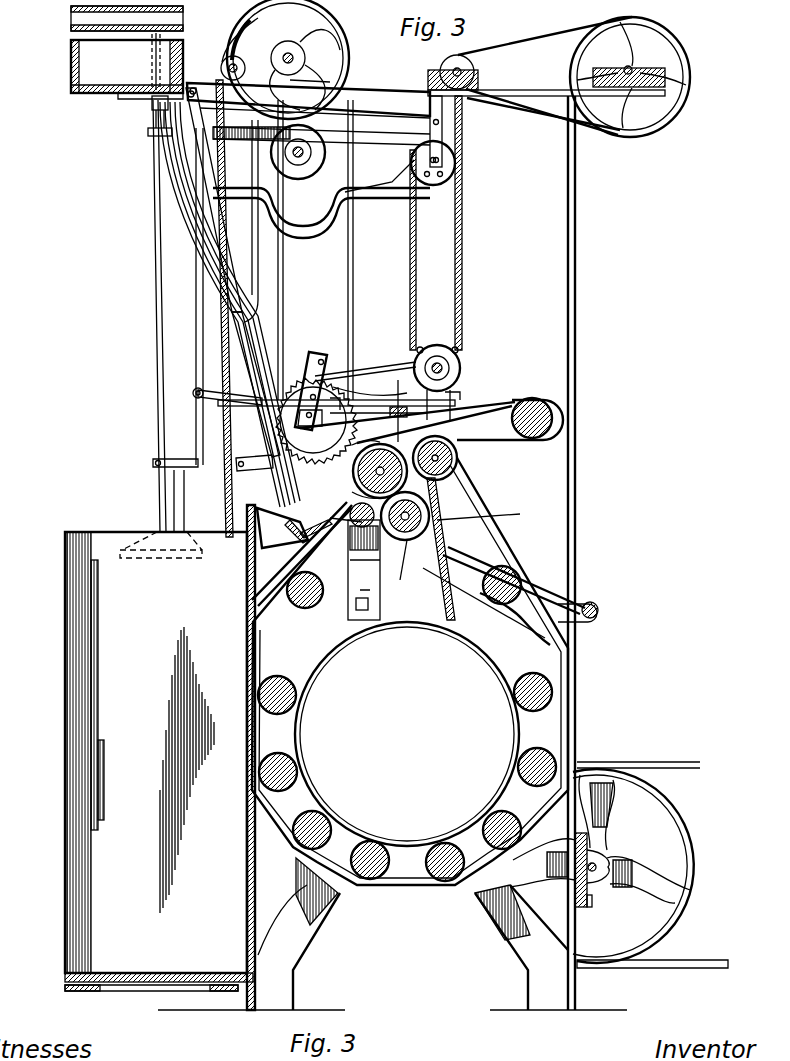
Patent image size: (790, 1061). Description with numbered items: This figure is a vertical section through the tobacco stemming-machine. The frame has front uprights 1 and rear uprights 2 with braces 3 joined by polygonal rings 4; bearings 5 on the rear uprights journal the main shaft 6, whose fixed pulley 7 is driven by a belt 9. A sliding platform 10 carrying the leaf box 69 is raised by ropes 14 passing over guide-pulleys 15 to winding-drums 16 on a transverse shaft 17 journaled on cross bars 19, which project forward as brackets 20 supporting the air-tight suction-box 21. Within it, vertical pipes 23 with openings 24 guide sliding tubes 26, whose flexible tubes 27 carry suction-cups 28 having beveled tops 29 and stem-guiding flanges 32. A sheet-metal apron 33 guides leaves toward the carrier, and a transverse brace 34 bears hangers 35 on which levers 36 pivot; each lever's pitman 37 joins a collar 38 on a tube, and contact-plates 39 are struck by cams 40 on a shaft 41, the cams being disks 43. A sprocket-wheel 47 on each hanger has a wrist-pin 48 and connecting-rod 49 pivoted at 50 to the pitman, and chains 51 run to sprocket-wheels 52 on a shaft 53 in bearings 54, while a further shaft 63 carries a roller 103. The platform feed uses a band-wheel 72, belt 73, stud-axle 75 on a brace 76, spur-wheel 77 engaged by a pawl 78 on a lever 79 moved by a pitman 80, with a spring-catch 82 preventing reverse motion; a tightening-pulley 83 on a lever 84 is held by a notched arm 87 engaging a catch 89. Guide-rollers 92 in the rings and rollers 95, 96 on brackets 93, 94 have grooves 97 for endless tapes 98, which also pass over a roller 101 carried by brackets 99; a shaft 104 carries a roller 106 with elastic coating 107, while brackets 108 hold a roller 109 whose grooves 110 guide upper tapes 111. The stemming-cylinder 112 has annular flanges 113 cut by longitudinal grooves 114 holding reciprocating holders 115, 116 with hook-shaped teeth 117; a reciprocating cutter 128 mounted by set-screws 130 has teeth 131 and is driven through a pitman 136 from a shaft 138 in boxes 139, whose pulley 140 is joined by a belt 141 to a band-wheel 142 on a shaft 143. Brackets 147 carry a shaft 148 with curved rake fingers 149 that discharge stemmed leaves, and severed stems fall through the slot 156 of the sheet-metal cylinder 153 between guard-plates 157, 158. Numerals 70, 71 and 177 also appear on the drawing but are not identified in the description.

The front legs or uprights 1 is at (204, 555).
The rear legs or uprights 2 is at (583, 553).
The braces 3 is at (413, 934).
The polygonal rings 4 is at (410, 885).
The boxes or bearings 5 is at (600, 868).
The main shaft 6 is at (598, 880).
The fixed pulley 7 is at (697, 847).
The belt 9 is at (612, 968).
The vertically-sliding platform 10 is at (140, 992).
The ropes 14 is at (225, 507).
The guide-pulleys 15 is at (221, 68).
The winding-drums 16 is at (300, 52).
The transverse shaft 17 is at (285, 55).
The cross bars 19 is at (425, 35).
The brackets 20 is at (124, 98).
The suction-box 21 is at (71, 72).
The vertical pipes 23 is at (152, 50).
The openings 24 is at (178, 14).
The vertically-sliding tubes 26 is at (152, 104).
The flexible tubes 27 is at (165, 195).
The suction-cups 28 is at (292, 520).
The beveled upper sides 29 is at (292, 544).
The rearwardly-converging flanges 32 is at (247, 565).
The sheet-metal guard or apron 33 is at (247, 826).
The transverse brace 34 is at (468, 97).
The hangers 35 is at (445, 140).
The lever 36 is at (357, 110).
The pitman 37 is at (252, 318).
The collar 38 is at (274, 462).
The angle-plates 39 is at (308, 99).
The cams 40 is at (302, 192).
The shaft 41 is at (292, 150).
The disks 43 is at (325, 153).
The sprocket-wheel 47 is at (392, 188).
The wrist-pin 48 is at (434, 186).
The connecting-rod 49 is at (374, 198).
The pivotal connection 50 is at (190, 196).
The chains 51 is at (475, 270).
The sprocket-wheels 52 is at (460, 366).
The transverse shaft 53 is at (448, 376).
The bearings 54 is at (457, 403).
The transverse shaft 63 is at (462, 466).
The box or tray 69 is at (156, 752).
The tank bottom 70 is at (159, 957).
The tank interior 71 is at (182, 587).
The band-wheel or drum 72 is at (338, 30).
The belt or band 73 is at (347, 56).
The stud-axle 75 is at (344, 416).
The brace 76 is at (397, 406).
The spur-wheel 77 is at (318, 440).
The pawl 78 is at (310, 75).
The lever 79 is at (321, 355).
The pitman 80 is at (378, 388).
The spring-catch 82 is at (360, 372).
The tightening-pulley 83 is at (278, 215).
The lever 84 is at (262, 282).
The pivoted arm 87 is at (216, 402).
The catch 89 is at (250, 400).
The guide-rollers 92 is at (290, 672).
The standard or bracket 93 is at (306, 609).
The standard or bracket 94 is at (505, 612).
The roller 95 is at (520, 568).
The roller 96 is at (348, 552).
The annular grooves 97 is at (495, 600).
The endless bands or tapes 98 is at (380, 580).
The brackets 99 is at (382, 560).
The cylindrical roller 101 is at (355, 505).
The roller 103 is at (458, 452).
The shaft 104 is at (356, 486).
The roller 106 is at (356, 470).
The coating or covering 107 is at (355, 452).
The brackets 108 is at (556, 425).
The roller 109 is at (552, 406).
The annular grooves 110 is at (536, 398).
The endless bands or tapes 111 is at (500, 405).
The stemming-cylinder 112 is at (430, 515).
The annular flanges 113 is at (440, 527).
The longitudinal grooves 114 is at (414, 565).
The reciprocating holder 115 is at (372, 535).
The reciprocating holder 116 is at (486, 513).
The hook-shaped teeth 117 is at (436, 549).
The reciprocating knife or cutter 128 is at (410, 500).
The set-screws 130 is at (425, 505).
The teeth 131 is at (455, 480).
The pitman 136 is at (458, 325).
The shaft 138 is at (475, 62).
The boxes 139 is at (462, 55).
The pulley 140 is at (447, 65).
The belt 141 is at (545, 76).
The band-wheel 142 is at (686, 45).
The transverse shaft 143 is at (636, 68).
The brackets 147 is at (585, 624).
The transverse shaft 148 is at (600, 604).
The curved fingers 149 is at (570, 555).
The cylinder 153 is at (352, 835).
The transverse slot 156 is at (414, 628).
The apron or guard-plate 157 is at (350, 622).
The guard-plate 158 is at (447, 585).
The ratchet 177 is at (338, 442).